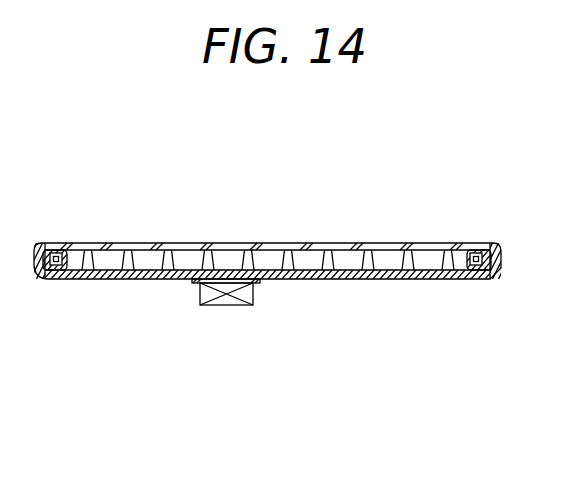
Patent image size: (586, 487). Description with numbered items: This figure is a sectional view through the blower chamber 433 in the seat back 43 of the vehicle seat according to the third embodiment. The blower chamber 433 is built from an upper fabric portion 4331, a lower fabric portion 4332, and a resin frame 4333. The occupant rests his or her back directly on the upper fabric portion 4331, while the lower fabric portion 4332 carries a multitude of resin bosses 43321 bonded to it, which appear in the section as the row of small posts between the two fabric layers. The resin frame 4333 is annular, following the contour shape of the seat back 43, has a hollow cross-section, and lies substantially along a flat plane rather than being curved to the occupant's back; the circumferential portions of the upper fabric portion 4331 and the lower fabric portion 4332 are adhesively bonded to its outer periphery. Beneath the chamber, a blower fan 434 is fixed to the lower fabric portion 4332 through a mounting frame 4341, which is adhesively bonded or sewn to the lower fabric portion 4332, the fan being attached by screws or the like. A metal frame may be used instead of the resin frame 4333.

The seat back 43 is at (312, 205).
The blower chamber 433 is at (532, 392).
The upper fabric portion 4331 is at (422, 265).
The lower fabric portion 4332 is at (363, 272).
The resin bosses 43321 is at (322, 256).
The resin frame 4333 is at (473, 272).
The blower fan 434 is at (229, 305).
The mounting frame 4341 is at (195, 283).